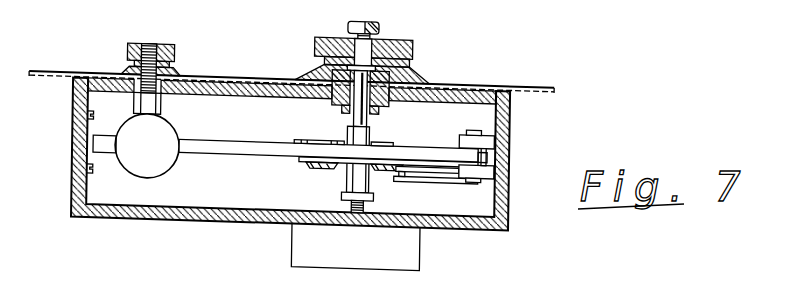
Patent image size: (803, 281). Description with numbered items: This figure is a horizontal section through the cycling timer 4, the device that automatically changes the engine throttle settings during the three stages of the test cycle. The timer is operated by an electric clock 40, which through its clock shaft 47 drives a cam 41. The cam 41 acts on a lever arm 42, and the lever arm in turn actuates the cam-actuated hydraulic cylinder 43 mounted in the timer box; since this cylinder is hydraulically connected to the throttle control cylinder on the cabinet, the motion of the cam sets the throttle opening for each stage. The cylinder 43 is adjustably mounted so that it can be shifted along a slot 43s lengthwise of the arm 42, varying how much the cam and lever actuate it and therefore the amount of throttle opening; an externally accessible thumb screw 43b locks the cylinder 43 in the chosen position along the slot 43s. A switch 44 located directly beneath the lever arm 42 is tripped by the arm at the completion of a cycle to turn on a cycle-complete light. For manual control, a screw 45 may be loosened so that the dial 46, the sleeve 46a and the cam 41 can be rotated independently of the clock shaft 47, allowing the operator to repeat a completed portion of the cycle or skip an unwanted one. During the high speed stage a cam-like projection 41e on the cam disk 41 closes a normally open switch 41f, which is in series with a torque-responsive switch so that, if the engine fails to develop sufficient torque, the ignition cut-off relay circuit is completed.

The cycling timer 4 is at (508, 203).
The electric clock 40 is at (418, 252).
The cam 41 is at (300, 158).
The cam-like projection 41e is at (335, 164).
The normally open switch 41f is at (425, 178).
The lever arm 42 is at (222, 141).
The cam-actuated hydraulic cylinder 43 is at (170, 132).
The thumb screw 43b is at (172, 55).
The slot 43s is at (190, 79).
The switch 44 is at (108, 163).
The screw 45 is at (377, 25).
The dial 46 is at (410, 43).
The sleeve 46a is at (367, 131).
The clock shaft 47 is at (373, 193).